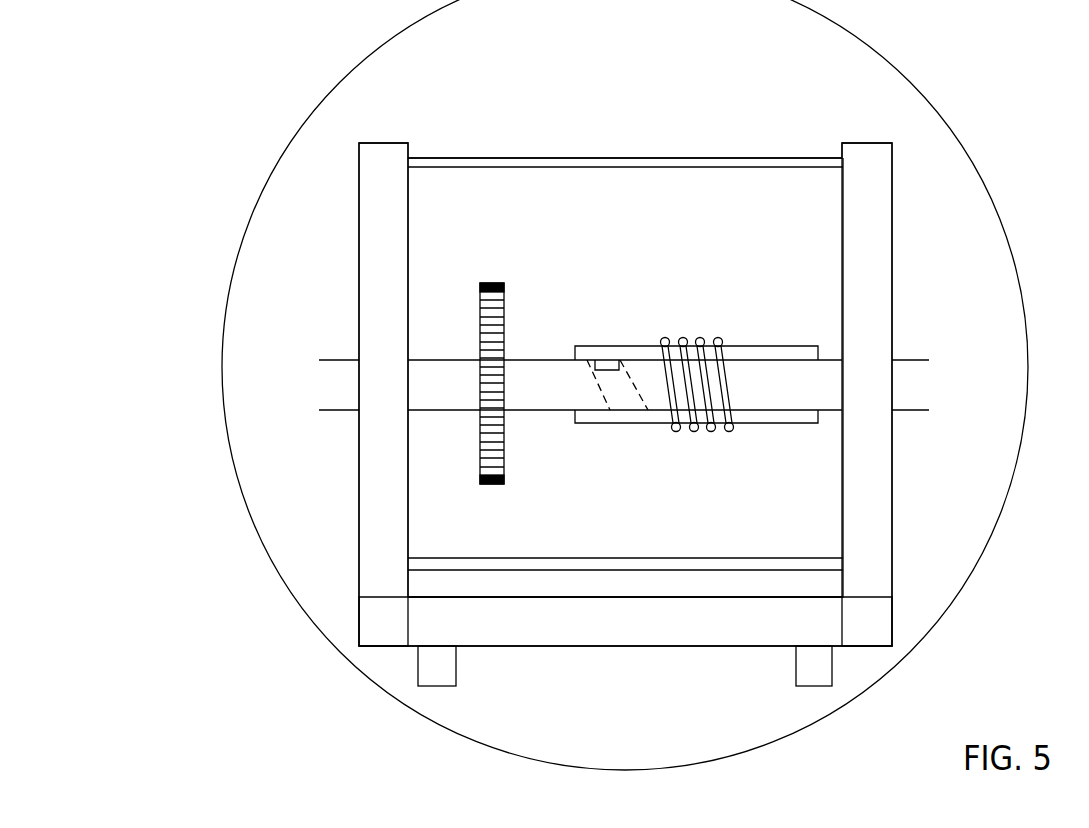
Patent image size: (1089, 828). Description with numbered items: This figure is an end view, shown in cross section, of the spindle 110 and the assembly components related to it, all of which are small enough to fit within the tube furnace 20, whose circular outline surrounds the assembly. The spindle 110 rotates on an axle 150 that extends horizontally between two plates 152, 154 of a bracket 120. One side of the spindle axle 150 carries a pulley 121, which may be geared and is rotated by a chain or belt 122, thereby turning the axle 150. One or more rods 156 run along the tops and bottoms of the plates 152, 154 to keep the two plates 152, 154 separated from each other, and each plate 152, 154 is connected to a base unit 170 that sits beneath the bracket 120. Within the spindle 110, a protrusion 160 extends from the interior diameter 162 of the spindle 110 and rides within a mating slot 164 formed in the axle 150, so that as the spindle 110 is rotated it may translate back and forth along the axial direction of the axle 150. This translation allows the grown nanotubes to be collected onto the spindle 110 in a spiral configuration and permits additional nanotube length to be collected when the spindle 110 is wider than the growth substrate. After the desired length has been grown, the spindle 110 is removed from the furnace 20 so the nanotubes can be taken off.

The tube furnace 20 is at (930, 100).
The spindle 110 is at (752, 346).
The bracket 120 is at (359, 259).
The pulley 121 is at (480, 318).
The chain or belt 122 is at (493, 282).
The axle 150 is at (918, 360).
The plate 152 is at (359, 183).
The plate 154 is at (893, 183).
The rod 156 is at (680, 158).
The protrusion 160 is at (608, 365).
The interior diameter 162 is at (800, 360).
The mating slot 164 is at (613, 386).
The base unit 170 is at (647, 624).